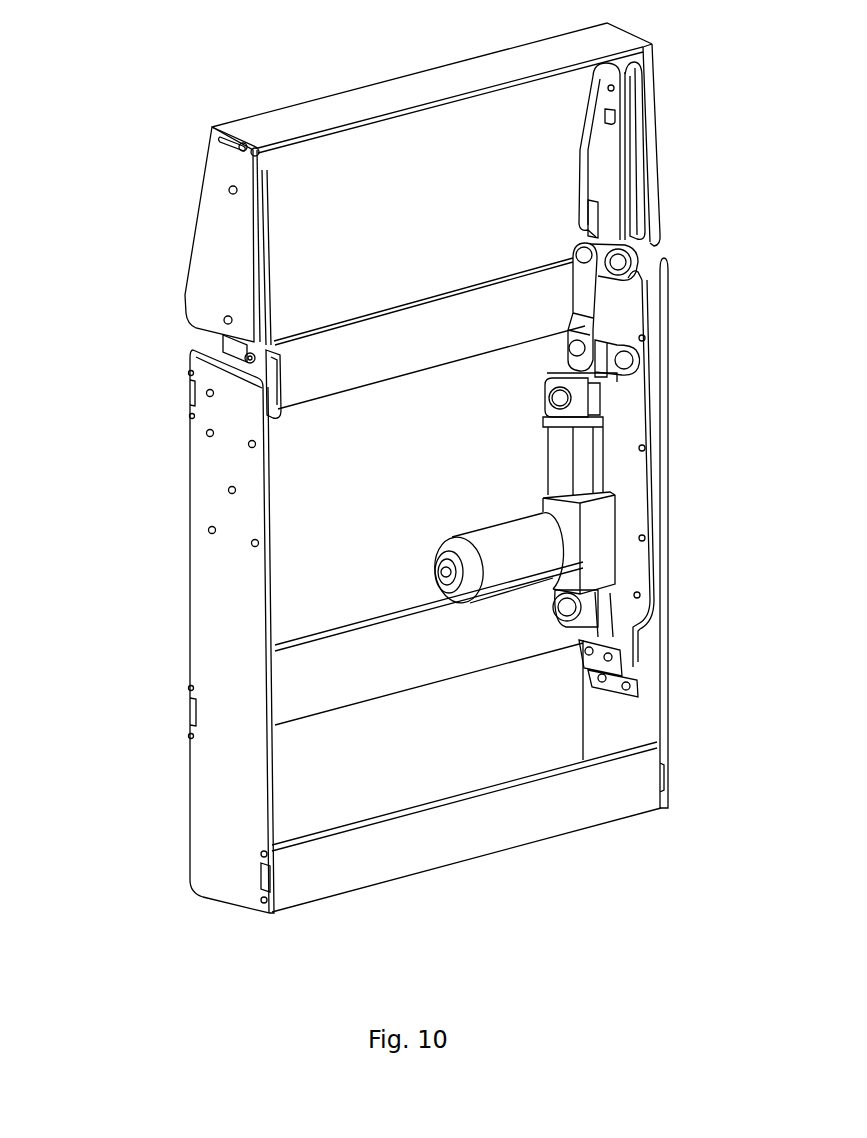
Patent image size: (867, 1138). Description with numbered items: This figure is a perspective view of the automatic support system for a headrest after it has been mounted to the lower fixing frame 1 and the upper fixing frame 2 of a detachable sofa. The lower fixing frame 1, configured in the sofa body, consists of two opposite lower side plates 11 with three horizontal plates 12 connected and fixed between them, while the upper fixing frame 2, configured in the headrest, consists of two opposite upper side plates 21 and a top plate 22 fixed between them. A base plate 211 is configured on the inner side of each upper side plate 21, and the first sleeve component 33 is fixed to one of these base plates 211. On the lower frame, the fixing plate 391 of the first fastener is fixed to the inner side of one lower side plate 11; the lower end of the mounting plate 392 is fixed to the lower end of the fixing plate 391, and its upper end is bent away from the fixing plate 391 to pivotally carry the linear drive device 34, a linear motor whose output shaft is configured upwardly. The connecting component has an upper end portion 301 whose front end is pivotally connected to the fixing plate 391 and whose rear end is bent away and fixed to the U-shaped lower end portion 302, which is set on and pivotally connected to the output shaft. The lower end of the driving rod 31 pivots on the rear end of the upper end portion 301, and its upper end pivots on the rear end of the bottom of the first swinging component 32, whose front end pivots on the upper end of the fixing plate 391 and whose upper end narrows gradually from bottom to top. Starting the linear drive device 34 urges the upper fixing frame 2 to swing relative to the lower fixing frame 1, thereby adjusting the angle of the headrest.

The lower fixing frame 1 is at (143, 636).
The upper fixing frame 2 is at (143, 212).
The lower side plate 11 is at (205, 790).
The horizontal plate 12 is at (437, 318).
The upper side plate 21 is at (205, 291).
The base plate 211 is at (641, 137).
The top plate 22 is at (405, 85).
The driving rod 31 is at (573, 287).
The first swinging component 32 is at (608, 165).
The first sleeve component 33 is at (588, 202).
The linear drive device 34 is at (560, 462).
The upper end portion 301 is at (605, 353).
The lower end portion 302 is at (545, 392).
The fixing plate 391 is at (640, 493).
The mounting plate 392 is at (597, 668).